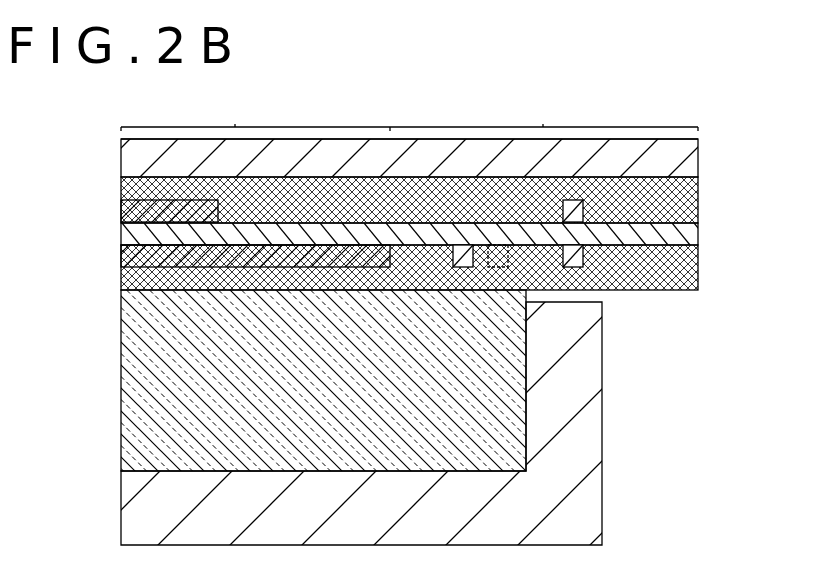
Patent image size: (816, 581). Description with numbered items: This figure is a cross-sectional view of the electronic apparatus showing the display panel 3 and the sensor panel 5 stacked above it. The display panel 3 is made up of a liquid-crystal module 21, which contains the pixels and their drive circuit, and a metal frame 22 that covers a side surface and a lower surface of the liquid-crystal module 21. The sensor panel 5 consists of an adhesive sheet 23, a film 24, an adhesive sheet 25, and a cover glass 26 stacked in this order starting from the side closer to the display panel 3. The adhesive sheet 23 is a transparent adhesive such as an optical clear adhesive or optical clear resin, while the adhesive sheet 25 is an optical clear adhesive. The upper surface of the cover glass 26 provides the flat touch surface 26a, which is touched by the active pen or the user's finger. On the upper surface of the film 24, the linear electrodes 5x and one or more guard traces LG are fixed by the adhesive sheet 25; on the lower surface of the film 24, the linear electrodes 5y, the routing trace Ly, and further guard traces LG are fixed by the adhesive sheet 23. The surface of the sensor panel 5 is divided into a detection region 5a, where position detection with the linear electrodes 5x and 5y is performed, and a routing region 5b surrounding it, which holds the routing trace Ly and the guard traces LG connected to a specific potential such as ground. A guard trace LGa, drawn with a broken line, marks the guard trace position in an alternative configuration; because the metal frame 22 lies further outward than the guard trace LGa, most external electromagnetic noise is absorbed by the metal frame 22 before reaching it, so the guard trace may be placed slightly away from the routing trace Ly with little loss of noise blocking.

The display panel 3 is at (317, 417).
The liquid-crystal module 21 is at (121, 368).
The metal frame 22 is at (60, 357).
The sensor panel 5 is at (454, 190).
The detection region 5a is at (255, 115).
The routing region 5b is at (544, 116).
The linear electrodes 5x is at (121, 210).
The linear electrodes 5y is at (121, 256).
The adhesive sheet 23 is at (439, 267).
The film 24 is at (698, 241).
The adhesive sheet 25 is at (698, 206).
The cover glass 26 is at (439, 134).
The touch surface 26a is at (443, 139).
The guard trace LG is at (573, 200).
The guard trace LGa is at (498, 267).
The routing trace Ly is at (463, 267).